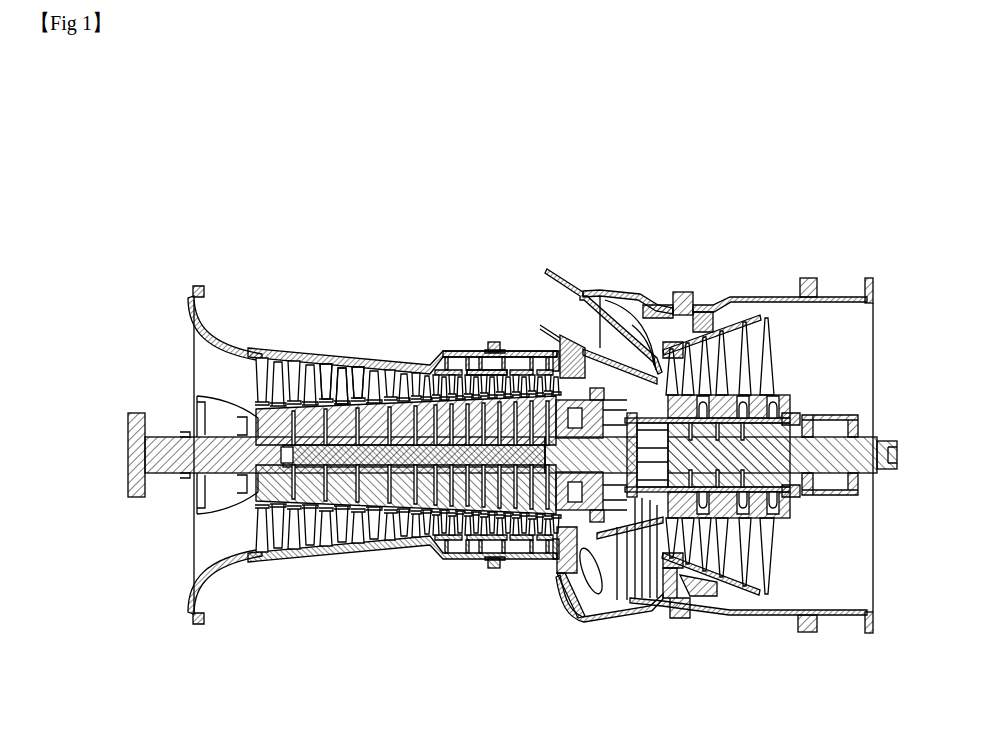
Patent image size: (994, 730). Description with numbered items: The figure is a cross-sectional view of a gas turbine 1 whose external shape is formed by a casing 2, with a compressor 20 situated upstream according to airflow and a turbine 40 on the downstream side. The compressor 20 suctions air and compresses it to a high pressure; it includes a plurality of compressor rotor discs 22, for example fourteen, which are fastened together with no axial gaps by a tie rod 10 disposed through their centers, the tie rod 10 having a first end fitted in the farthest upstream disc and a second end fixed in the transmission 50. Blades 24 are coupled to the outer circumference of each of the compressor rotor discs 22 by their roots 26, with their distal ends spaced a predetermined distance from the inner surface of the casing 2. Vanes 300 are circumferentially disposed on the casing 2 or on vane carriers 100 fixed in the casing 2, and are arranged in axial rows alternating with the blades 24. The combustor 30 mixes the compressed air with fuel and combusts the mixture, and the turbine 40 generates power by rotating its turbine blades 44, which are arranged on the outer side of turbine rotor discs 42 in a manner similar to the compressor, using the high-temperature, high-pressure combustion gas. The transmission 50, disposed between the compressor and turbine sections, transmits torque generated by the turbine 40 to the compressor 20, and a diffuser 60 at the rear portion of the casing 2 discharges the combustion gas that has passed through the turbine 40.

The gas turbine 1 is at (824, 131).
The casing 2 is at (415, 346).
The tie rod 10 is at (270, 478).
The compressor 20 is at (247, 345).
The compressor rotor discs 22 is at (323, 365).
The blades 24 is at (327, 368).
The roots 26 is at (345, 370).
The combustor 30 is at (555, 262).
The turbine 40 is at (662, 600).
The turbine rotor discs 42 is at (733, 408).
The turbine blades 44 is at (761, 315).
The transmission 50 is at (623, 487).
The diffuser 60 is at (838, 278).
The vane carriers 100 is at (531, 358).
The vanes 300 is at (474, 366).